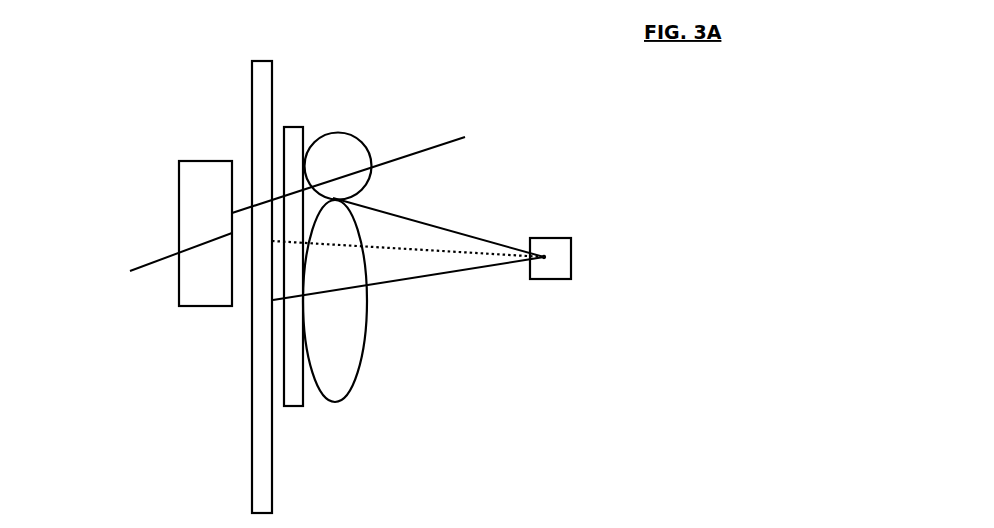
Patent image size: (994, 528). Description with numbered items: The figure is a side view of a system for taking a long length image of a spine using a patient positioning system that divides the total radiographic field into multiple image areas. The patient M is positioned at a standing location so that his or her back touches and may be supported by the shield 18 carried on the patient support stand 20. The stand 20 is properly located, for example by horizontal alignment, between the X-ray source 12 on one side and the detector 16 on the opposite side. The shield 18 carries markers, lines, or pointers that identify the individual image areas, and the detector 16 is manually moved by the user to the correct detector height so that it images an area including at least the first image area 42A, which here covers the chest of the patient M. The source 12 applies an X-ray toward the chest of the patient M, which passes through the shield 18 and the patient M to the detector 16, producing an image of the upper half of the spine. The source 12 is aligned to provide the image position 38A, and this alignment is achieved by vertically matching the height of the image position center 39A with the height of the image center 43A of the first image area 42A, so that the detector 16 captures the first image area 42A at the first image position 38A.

The stand 20 is at (251, 99).
The shield 18 is at (301, 127).
The detector 16 is at (203, 307).
The source 12 is at (571, 276).
The image area 42A is at (380, 146).
The image center 43A is at (131, 262).
The image position 38A is at (403, 233).
The image position center 39A is at (420, 252).
The patient M is at (361, 142).